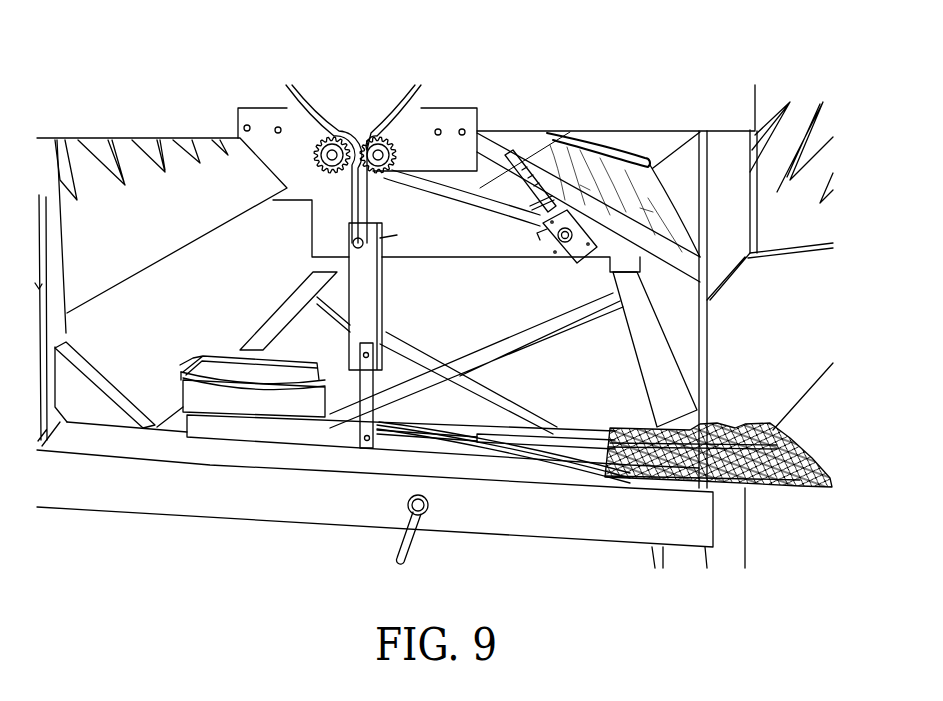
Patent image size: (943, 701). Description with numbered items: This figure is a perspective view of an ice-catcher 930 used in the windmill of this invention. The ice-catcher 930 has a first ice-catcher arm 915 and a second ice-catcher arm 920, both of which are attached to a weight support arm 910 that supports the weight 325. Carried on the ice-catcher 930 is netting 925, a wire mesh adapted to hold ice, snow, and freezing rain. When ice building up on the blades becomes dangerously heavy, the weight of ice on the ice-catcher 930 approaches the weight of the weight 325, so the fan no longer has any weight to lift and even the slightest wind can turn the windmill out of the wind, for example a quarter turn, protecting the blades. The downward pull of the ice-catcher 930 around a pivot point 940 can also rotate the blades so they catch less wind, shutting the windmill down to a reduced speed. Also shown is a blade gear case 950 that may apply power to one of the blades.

The weight 325 is at (243, 362).
The weight support arm 910 is at (330, 421).
The first ice-catcher arm 915 is at (397, 438).
The second ice-catcher arm 920 is at (517, 433).
The netting 925 is at (710, 425).
The ice-catcher 930 is at (743, 398).
The pivot point 940 is at (497, 452).
The blade gear case 950 is at (548, 243).